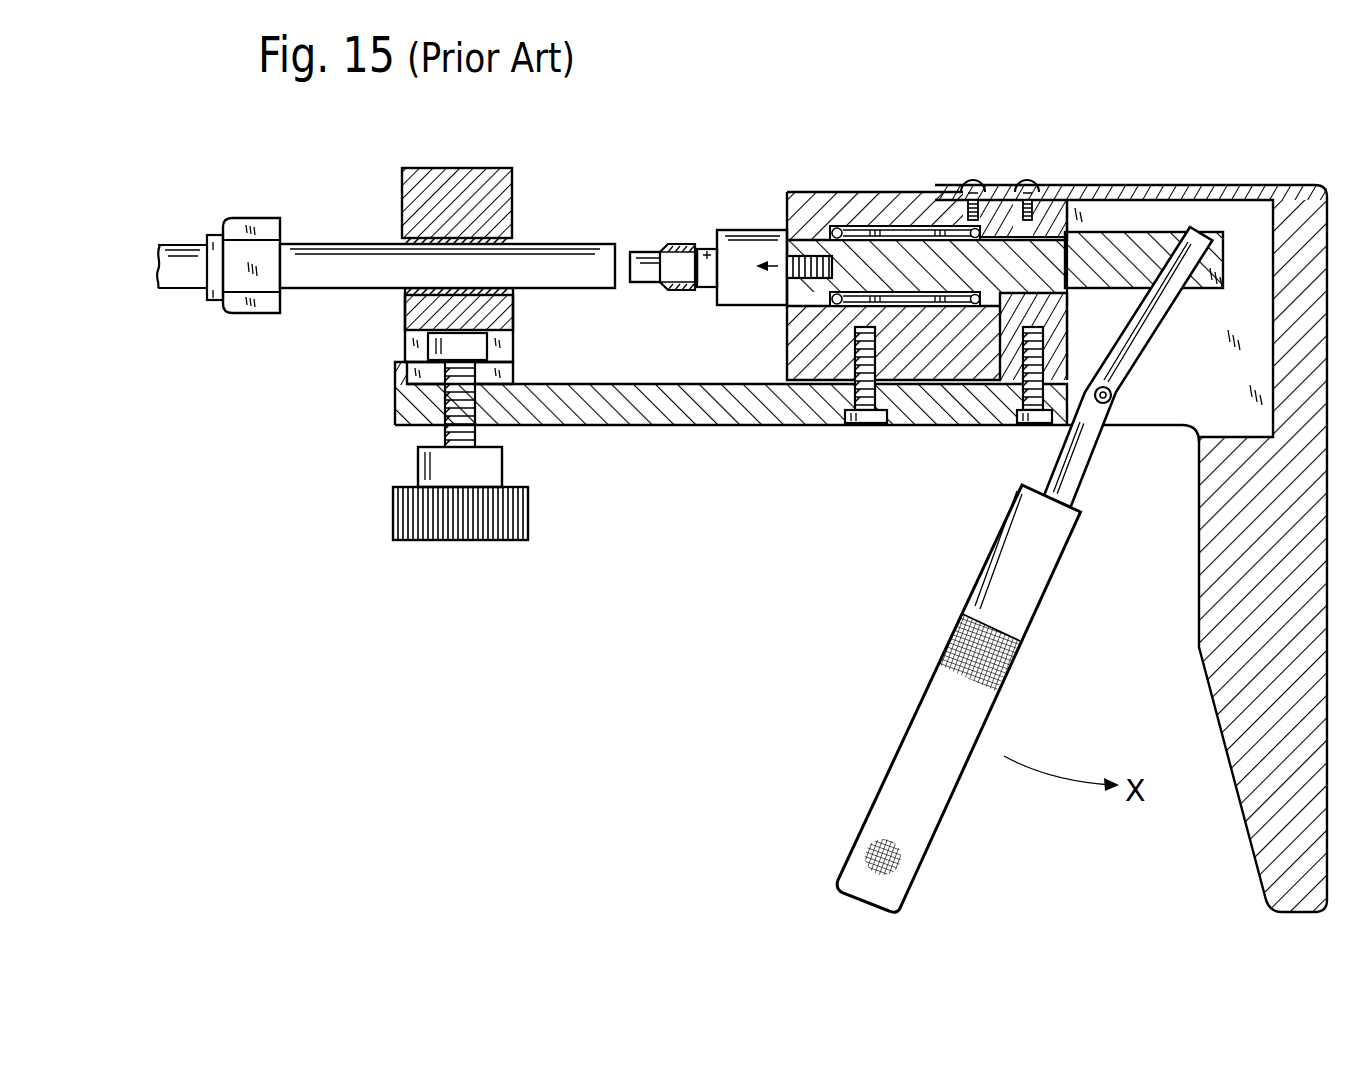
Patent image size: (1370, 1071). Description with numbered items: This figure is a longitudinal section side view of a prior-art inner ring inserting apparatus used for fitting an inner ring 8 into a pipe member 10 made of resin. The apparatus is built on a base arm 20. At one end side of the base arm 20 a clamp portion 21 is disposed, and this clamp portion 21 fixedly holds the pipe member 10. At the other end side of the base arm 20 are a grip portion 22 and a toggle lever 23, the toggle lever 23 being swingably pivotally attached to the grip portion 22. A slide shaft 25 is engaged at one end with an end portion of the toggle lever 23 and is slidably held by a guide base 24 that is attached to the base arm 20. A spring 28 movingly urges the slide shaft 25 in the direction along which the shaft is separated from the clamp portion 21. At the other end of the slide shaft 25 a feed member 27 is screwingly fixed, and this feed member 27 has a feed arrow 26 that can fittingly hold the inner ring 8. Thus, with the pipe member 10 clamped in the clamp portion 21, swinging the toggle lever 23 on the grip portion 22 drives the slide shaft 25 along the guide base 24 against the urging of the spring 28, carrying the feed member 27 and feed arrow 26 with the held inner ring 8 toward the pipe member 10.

The inner ring 8 is at (665, 243).
The pipe member 10 is at (330, 276).
The base arm 20 is at (667, 413).
The clamp portion 21 is at (488, 166).
The grip portion 22 is at (1229, 489).
The toggle lever 23 is at (973, 701).
The guide base 24 is at (888, 192).
The slide shaft 25 is at (1112, 245).
The feed arrow 26 is at (645, 274).
The feed member 27 is at (706, 249).
The spring 28 is at (928, 190).